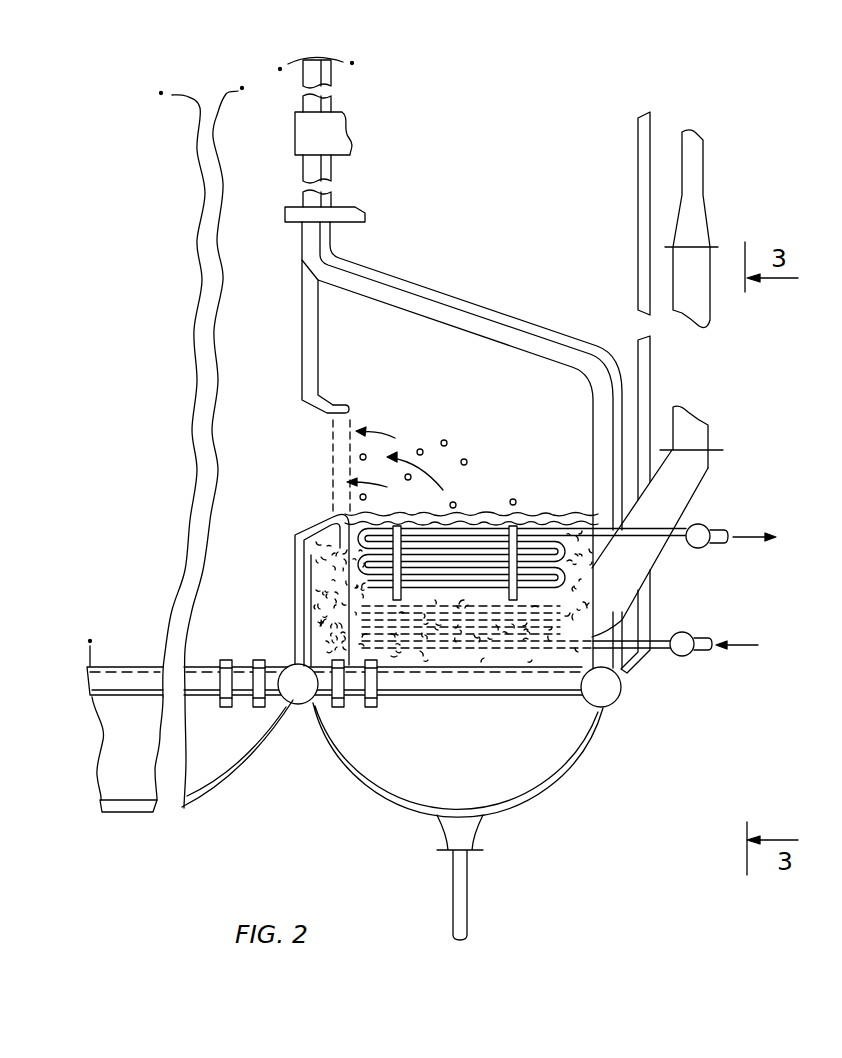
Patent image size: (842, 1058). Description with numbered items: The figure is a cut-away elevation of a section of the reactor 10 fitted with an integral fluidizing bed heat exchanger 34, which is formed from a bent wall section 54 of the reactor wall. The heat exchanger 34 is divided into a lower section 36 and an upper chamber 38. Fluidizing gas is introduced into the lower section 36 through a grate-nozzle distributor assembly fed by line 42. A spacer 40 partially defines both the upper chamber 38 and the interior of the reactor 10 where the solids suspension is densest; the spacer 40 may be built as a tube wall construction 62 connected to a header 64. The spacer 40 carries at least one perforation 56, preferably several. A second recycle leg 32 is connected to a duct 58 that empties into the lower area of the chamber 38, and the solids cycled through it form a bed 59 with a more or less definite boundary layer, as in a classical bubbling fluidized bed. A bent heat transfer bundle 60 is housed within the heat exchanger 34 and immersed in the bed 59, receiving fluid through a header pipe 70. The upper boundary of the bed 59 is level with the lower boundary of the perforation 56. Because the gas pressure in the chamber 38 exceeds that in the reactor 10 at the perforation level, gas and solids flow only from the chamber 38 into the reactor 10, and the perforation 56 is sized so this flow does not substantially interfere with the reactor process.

The reactor 10 is at (330, 237).
The second recycle leg 32 is at (697, 158).
The integral fluidizing bed heat exchanger 34 is at (522, 323).
The lower section 36 is at (562, 775).
The upper chamber 38 is at (517, 408).
The spacer 40 is at (322, 328).
The line 42 is at (463, 880).
The bent wall section 54 is at (432, 297).
The perforation 56 is at (348, 427).
The duct 58 is at (620, 593).
The bed 59 is at (470, 513).
The bent heat transfer bundle 60 is at (533, 552).
The tube wall construction 62 is at (315, 352).
The header 64 is at (298, 703).
The header pipe 70 is at (614, 685).